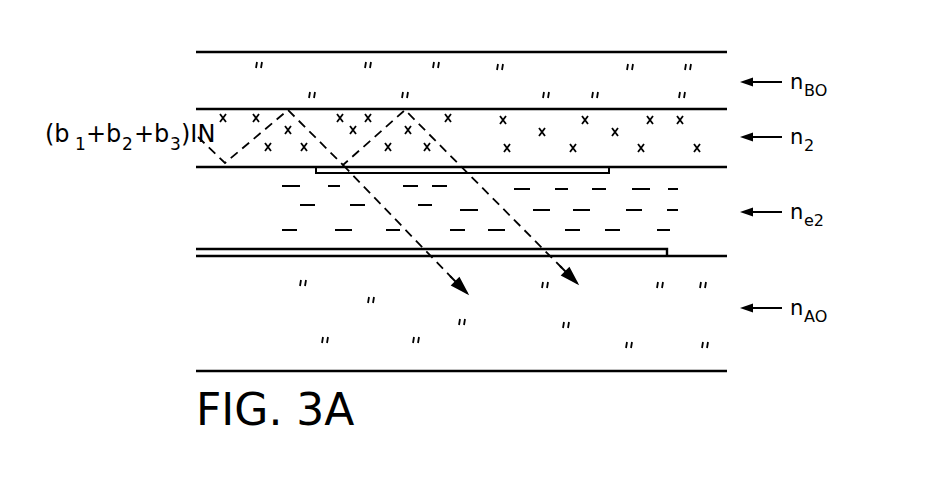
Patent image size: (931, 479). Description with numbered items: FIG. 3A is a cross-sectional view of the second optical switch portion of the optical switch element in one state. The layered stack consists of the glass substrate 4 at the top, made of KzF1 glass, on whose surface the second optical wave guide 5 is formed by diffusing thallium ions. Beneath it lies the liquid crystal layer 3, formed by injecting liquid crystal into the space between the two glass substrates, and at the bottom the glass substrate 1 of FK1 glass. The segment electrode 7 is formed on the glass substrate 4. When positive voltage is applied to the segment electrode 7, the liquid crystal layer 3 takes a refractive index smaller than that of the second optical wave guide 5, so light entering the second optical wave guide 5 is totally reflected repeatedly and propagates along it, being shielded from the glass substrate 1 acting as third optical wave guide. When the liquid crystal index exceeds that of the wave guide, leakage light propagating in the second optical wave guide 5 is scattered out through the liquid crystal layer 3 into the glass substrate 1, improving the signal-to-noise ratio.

The glass substrate 1 is at (246, 333).
The liquid crystal layer 3 is at (229, 225).
The glass substrate 4 is at (595, 67).
The second optical wave guide 5 is at (523, 126).
The segment electrode 7 is at (487, 166).